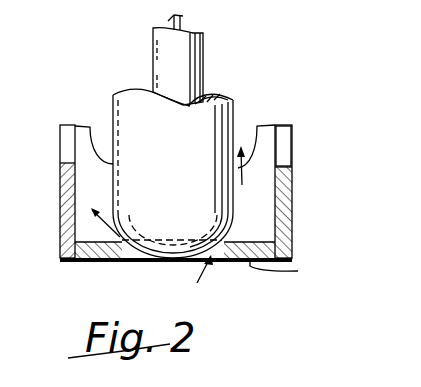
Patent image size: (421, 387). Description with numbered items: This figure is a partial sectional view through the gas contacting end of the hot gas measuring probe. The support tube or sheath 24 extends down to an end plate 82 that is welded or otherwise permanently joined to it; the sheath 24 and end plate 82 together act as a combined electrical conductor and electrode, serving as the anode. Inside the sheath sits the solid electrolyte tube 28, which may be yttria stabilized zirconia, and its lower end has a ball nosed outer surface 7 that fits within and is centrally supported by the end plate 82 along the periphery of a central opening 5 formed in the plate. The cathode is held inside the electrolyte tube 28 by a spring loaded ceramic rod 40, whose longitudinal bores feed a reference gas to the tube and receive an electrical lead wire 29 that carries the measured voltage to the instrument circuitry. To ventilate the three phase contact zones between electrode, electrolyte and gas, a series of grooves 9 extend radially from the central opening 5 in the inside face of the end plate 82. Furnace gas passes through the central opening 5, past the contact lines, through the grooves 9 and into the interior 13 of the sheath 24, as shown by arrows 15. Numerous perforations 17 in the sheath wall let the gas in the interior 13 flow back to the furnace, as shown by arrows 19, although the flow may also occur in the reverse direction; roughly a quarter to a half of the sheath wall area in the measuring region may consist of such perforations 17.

The central opening 5 is at (127, 262).
The ball nosed outer surface 7 is at (183, 263).
The grooves 9 is at (117, 238).
The interior of the sheath 13 is at (248, 201).
The arrows 15 is at (110, 221).
The perforations 17 is at (247, 140).
The arrows 19 is at (241, 174).
The sheath 24 is at (280, 173).
The solid electrolyte tube 28 is at (250, 74).
The electrical lead wire 29 is at (185, 17).
The ceramic rod 40 is at (163, 40).
The end plate 82 is at (286, 272).